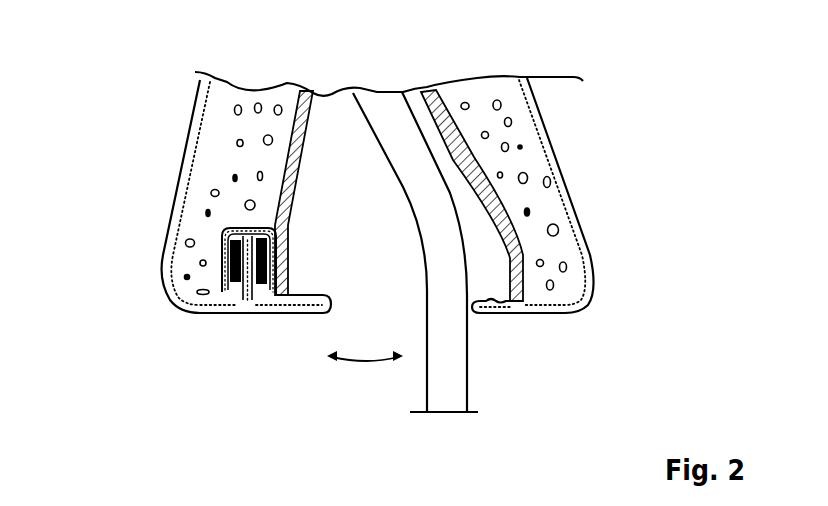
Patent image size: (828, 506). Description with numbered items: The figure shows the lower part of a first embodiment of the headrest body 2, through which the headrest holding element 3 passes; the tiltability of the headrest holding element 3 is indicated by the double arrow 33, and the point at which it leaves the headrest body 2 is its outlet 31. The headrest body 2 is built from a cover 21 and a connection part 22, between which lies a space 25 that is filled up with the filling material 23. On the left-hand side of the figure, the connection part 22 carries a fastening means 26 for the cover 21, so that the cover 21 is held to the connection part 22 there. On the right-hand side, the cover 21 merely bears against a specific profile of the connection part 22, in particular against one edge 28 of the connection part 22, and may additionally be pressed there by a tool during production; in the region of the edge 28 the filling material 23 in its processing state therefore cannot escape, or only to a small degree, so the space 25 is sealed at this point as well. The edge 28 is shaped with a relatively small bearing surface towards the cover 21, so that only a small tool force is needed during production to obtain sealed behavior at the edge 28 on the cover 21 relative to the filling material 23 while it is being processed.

The headrest body 2 is at (105, 70).
The headrest holding element 3 is at (454, 392).
The cover 21 is at (553, 143).
The connection part 22 is at (292, 168).
The filling material 23 is at (183, 260).
The space 25 is at (425, 80).
The fastening means 26 is at (232, 251).
The edge 28 is at (516, 322).
The outlet 31 is at (470, 347).
The double arrow 33 is at (370, 363).